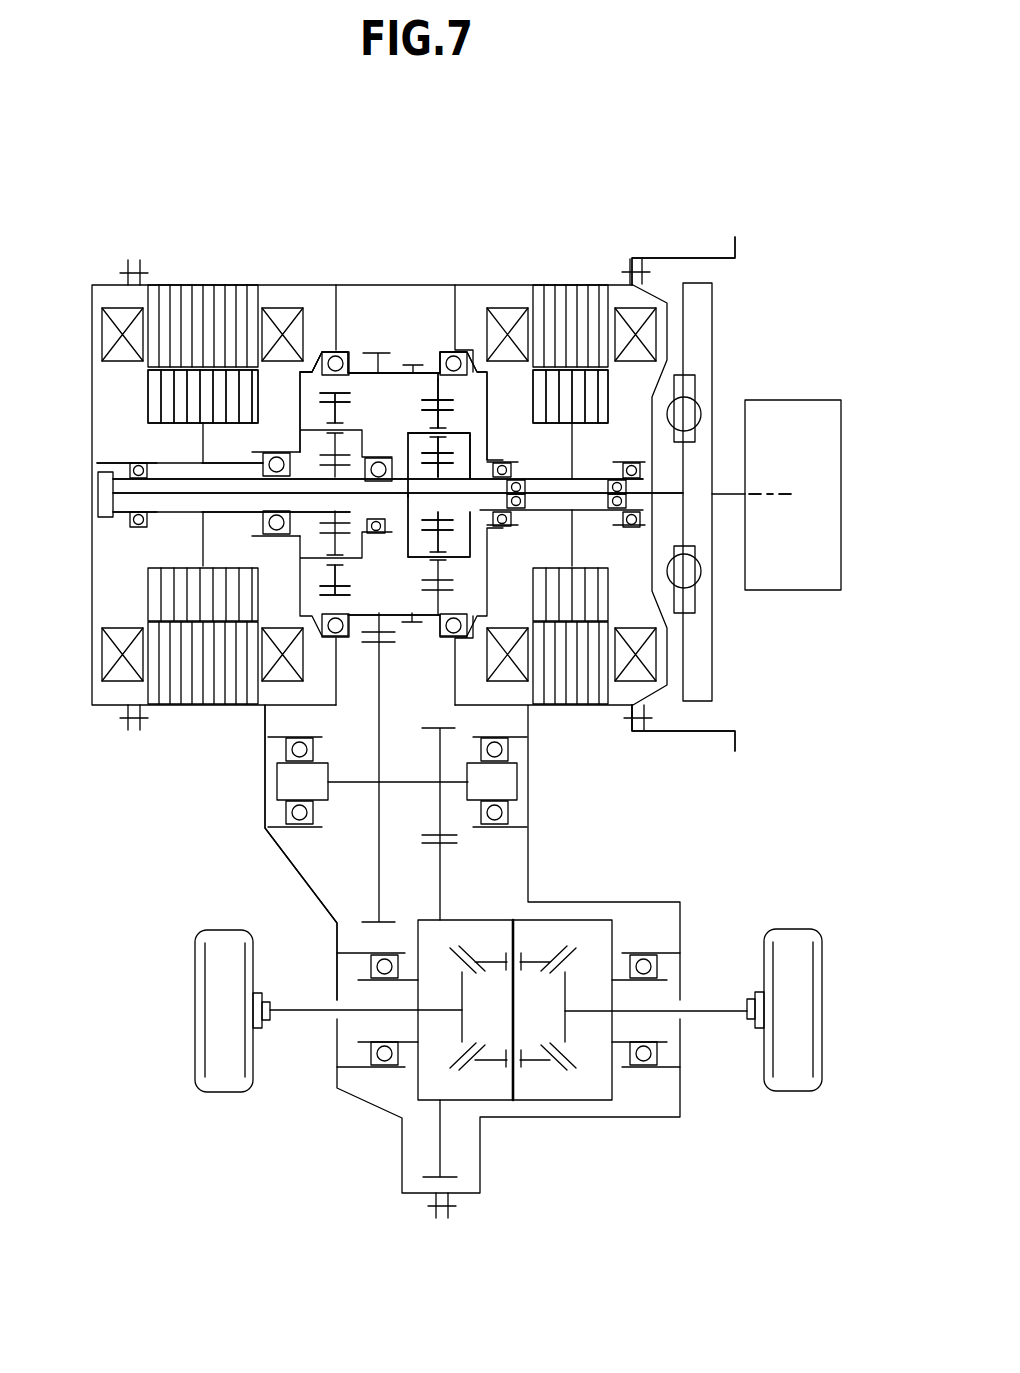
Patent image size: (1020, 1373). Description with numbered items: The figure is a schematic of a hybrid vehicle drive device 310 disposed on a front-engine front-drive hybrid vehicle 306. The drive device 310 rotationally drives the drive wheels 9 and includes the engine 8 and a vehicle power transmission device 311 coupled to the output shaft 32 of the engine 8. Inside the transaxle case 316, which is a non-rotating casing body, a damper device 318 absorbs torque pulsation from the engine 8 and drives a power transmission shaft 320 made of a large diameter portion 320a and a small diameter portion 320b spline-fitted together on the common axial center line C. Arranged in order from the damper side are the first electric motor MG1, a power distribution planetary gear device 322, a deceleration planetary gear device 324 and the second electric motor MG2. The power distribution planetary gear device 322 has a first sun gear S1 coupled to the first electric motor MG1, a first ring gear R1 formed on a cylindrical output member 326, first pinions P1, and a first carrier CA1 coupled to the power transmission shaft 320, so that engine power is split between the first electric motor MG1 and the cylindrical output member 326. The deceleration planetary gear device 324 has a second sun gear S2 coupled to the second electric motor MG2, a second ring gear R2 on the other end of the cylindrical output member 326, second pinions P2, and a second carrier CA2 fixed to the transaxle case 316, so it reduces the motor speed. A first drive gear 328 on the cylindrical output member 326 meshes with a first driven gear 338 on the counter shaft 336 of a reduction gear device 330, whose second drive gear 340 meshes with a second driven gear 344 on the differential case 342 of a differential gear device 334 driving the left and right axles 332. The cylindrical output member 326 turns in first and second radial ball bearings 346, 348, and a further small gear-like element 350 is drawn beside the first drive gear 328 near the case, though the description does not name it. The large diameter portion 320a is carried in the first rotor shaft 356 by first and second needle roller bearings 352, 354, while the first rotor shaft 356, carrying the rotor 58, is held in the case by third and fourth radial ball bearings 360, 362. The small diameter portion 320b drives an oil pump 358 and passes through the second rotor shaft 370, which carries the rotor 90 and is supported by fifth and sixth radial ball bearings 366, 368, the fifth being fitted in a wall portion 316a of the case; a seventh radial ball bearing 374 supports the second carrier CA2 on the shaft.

The engine 8 is at (820, 402).
The drive wheels 9 is at (218, 1090).
The output shaft 32 is at (724, 491).
The rotor 58 is at (606, 386).
The rotor 90 is at (148, 393).
The first electric motor MG1 is at (571, 272).
The second electric motor MG2 is at (203, 272).
The hybrid vehicle 306 is at (792, 124).
The hybrid vehicle drive device 310 is at (812, 232).
The vehicle power transmission device 311 is at (100, 222).
The transaxle case 316 is at (403, 283).
The wall portion 316a is at (350, 285).
The damper device 318 is at (698, 404).
The power transmission shaft 320 is at (678, 510).
The large diameter portion 320a is at (578, 497).
The small diameter portion 320b is at (186, 495).
The power distribution planetary gear device 322 is at (478, 415).
The deceleration planetary gear device 324 is at (312, 412).
The cylindrical output member 326 is at (353, 372).
The first drive gear 328 is at (389, 350).
The reduction gear device 330 is at (335, 854).
The axles 332 is at (312, 1013).
The differential gear device 334 is at (549, 1122).
The counter shaft 336 is at (405, 784).
The first driven gear 338 is at (385, 645).
The second drive gear 340 is at (433, 727).
The differential case 342 is at (561, 919).
The second driven gear 344 is at (450, 844).
The first radial ball bearing 346 is at (452, 355).
The second radial ball bearing 348 is at (333, 357).
The second gear 350 is at (413, 363).
The first needle roller bearing 352 is at (611, 503).
The second needle roller bearing 354 is at (523, 502).
The first rotor shaft 356 is at (575, 478).
The oil pump 358 is at (98, 484).
The third radial ball bearing 360 is at (631, 463).
The fourth radial ball bearing 362 is at (509, 524).
The fifth radial ball bearing 366 is at (266, 464).
The sixth radial ball bearing 368 is at (137, 528).
The second rotor shaft 370 is at (176, 476).
The seventh radial ball bearing 374 is at (361, 526).
The axial center line C is at (765, 490).
The first sun gear S1 is at (404, 470).
The first ring gear R1 is at (441, 392).
The first carrier CA1 is at (406, 448).
The first pinions P1 is at (470, 458).
The second sun gear S2 is at (360, 540).
The second ring gear R2 is at (327, 591).
The second carrier CA2 is at (352, 560).
The second pinions P2 is at (327, 532).